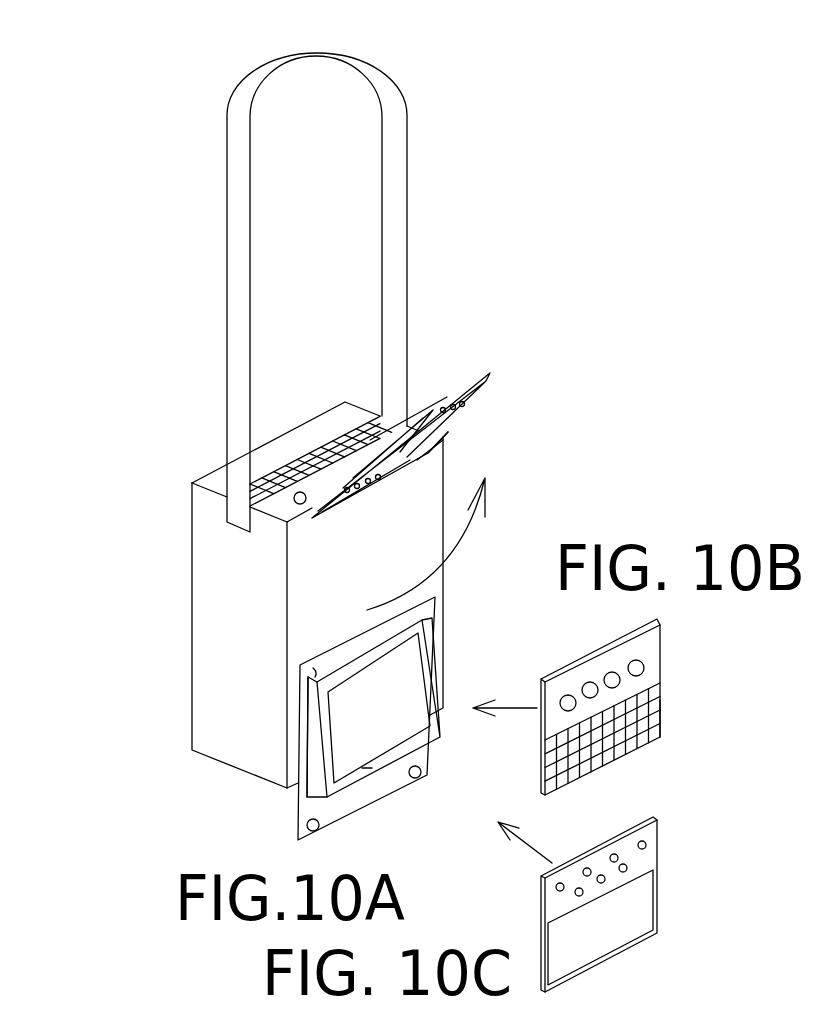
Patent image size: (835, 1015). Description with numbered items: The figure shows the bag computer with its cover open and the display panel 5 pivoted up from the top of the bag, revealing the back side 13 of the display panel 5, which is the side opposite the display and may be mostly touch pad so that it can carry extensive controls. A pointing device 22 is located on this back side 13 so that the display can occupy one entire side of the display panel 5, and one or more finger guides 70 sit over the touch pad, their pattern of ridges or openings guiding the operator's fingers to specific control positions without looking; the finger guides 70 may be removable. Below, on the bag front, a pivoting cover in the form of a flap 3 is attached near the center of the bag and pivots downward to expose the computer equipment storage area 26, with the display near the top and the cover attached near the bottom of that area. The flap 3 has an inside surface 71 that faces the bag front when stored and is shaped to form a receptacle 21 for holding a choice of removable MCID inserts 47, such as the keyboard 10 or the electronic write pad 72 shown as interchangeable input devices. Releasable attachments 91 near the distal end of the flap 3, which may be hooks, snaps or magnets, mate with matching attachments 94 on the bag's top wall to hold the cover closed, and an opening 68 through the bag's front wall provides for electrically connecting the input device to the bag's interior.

In FIG. 10A, the computer equipment storage area 26 is at (350, 588).
In FIG. 10A, the finger guides 70 is at (375, 433).
In FIG. 10A, the matching attachments 94 is at (296, 493).
In FIG. 10A, the display panel 5 is at (490, 373).
In FIG. 10A, the back side 13 is at (467, 410).
In FIG. 10A, the pointing device 22 is at (448, 435).
In FIG. 10A, the flap 3 is at (295, 808).
In FIG. 10A, the releasable attachments 91 is at (320, 825).
In FIG. 10A, the receptacle 21 is at (387, 675).
In FIG. 10A, the opening 68 is at (313, 672).
In FIG. 10A, the inside surface 71 is at (300, 750).
In FIG. 10B, the keyboard 10 is at (625, 720).
In FIG. 10B, the removable MCID inserts 47 is at (662, 847).
In FIG. 10C, the electronic write pad 72 is at (628, 918).